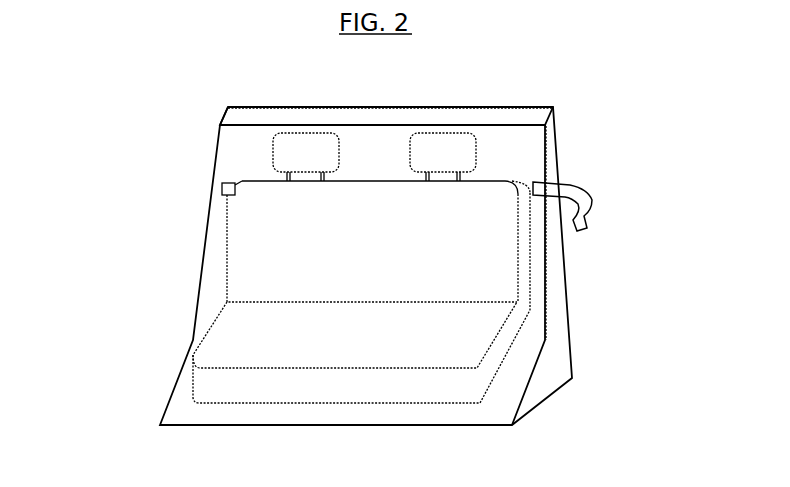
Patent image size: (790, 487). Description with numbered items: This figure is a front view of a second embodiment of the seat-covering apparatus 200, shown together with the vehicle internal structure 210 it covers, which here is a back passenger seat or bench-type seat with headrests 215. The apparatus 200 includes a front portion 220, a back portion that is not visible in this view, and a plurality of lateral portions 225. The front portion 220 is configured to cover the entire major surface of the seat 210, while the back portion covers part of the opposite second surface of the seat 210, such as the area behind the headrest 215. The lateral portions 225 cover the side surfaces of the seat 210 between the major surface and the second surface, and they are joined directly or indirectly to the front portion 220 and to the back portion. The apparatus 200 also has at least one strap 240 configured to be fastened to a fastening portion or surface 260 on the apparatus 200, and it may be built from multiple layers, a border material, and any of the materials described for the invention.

The apparatus 200 is at (190, 95).
The internal structure 210 is at (245, 233).
The headrest 215 is at (458, 150).
The front portion 220 is at (530, 150).
The lateral portions 225 is at (556, 268).
The strap 240 is at (595, 190).
The fastening portion 260 is at (217, 187).